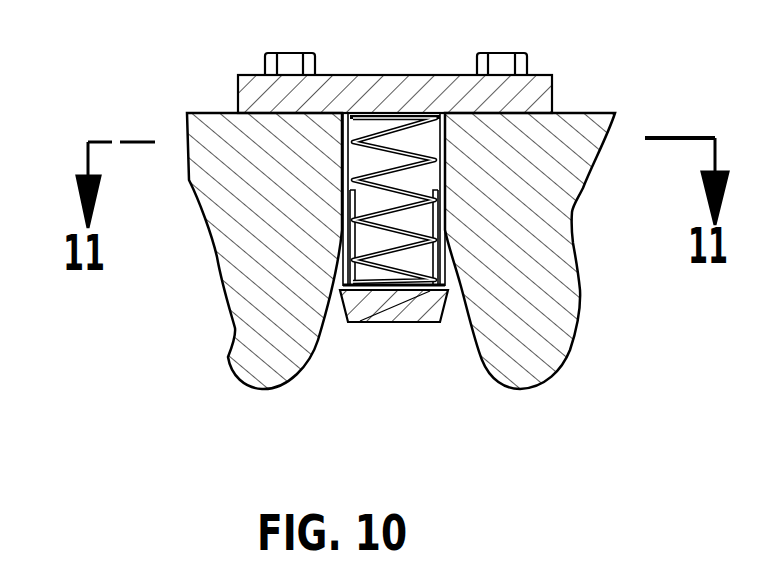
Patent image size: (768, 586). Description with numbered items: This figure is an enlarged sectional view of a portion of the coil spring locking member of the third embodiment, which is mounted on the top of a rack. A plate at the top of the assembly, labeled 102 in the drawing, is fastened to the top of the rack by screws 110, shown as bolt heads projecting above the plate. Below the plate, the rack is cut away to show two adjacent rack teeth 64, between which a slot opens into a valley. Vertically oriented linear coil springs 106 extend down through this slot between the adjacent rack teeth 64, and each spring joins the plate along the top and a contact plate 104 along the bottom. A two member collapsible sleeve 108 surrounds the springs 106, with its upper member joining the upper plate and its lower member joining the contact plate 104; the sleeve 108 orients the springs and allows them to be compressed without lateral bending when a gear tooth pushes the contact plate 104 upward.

The rack teeth 64 is at (276, 372).
The plate 102 is at (333, 82).
The contact plate 104 is at (443, 298).
The linear coil springs 106 is at (388, 293).
The collapsible sleeve 108 is at (445, 117).
The screws 110 is at (517, 63).